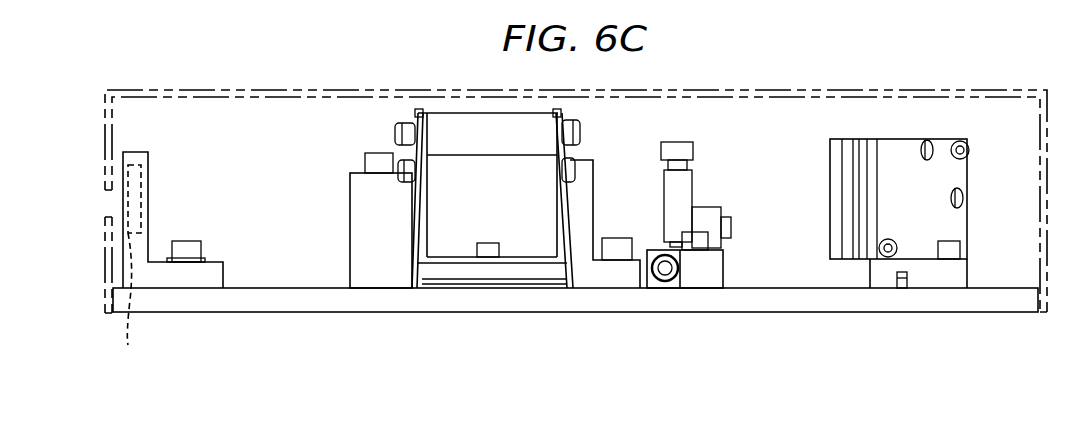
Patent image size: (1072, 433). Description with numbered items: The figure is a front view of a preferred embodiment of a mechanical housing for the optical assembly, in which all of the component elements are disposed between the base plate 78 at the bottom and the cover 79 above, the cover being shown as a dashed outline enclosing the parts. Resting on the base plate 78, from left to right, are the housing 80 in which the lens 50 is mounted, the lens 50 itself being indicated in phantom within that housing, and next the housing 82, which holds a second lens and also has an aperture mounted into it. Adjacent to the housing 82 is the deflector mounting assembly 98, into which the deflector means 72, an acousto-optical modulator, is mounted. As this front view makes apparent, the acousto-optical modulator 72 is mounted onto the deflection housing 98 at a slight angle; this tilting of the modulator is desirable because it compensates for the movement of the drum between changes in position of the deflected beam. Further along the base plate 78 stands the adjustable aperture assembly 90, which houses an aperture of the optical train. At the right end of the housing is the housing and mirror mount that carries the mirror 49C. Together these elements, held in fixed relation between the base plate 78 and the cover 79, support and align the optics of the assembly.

The cover 79 is at (985, 87).
The base plate 78 is at (1015, 305).
The housing 80 is at (198, 282).
The lens 50 is at (132, 267).
The housing 82 is at (381, 220).
The deflector means 72 is at (517, 198).
The deflector mounting assembly 98 is at (412, 247).
The adjustable aperture assembly 90 is at (697, 278).
The mirror 49C is at (945, 178).